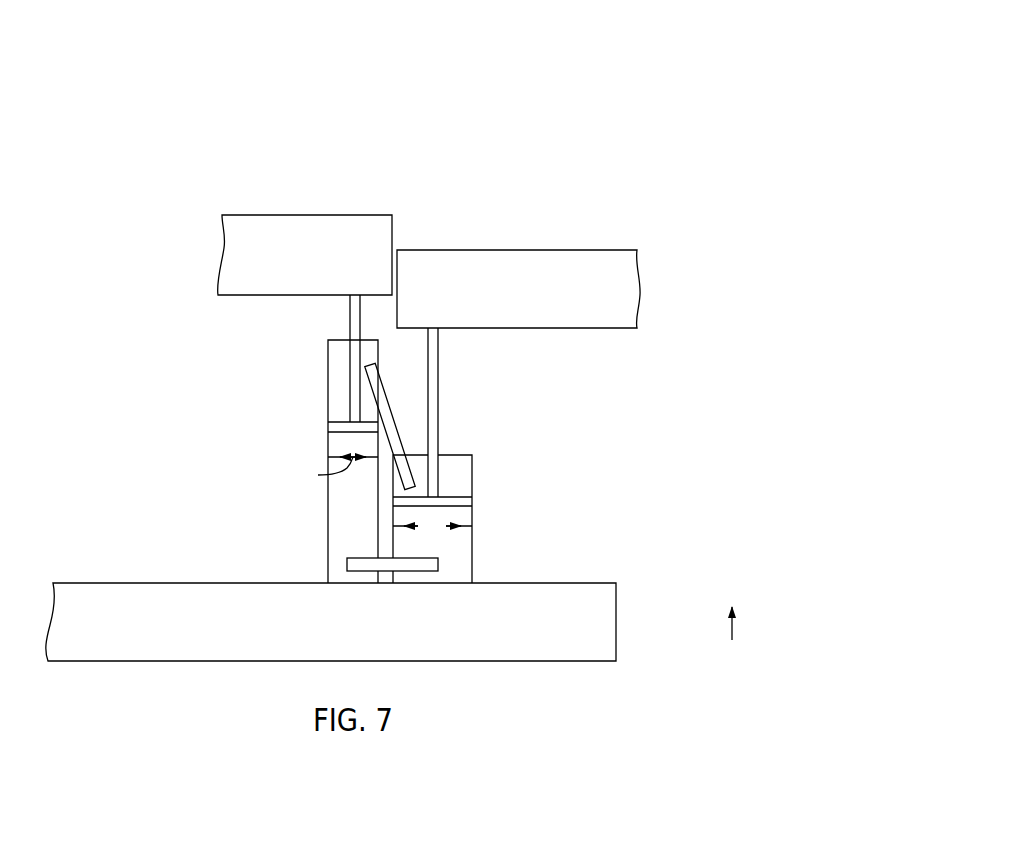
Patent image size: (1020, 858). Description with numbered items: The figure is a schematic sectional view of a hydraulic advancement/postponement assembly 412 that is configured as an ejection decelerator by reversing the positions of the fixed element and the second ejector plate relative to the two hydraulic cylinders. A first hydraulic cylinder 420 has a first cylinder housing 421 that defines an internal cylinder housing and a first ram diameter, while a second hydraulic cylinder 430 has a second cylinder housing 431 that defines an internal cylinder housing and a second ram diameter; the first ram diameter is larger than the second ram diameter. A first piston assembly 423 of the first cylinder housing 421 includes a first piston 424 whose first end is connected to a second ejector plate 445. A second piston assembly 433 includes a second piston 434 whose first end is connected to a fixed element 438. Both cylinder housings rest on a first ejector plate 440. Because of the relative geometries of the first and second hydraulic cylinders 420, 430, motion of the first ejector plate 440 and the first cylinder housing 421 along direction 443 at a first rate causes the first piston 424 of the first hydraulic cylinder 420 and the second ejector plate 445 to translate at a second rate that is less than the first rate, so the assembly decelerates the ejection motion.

The hydraulic advancement/postponement assembly 412 is at (608, 98).
The fixed element 438 is at (293, 214).
The second ejector plate 445 is at (582, 250).
The second piston 434 is at (350, 317).
The second piston assembly 433 is at (305, 380).
The second hydraulic cylinder 430 is at (283, 439).
The second cylinder housing 431 is at (328, 545).
The first piston assembly 423 is at (469, 417).
The first piston 424 is at (438, 437).
The first hydraulic cylinder 420 is at (512, 455).
The first cylinder housing 421 is at (472, 553).
The first ejector plate 440 is at (616, 620).
The direction 443 is at (732, 618).